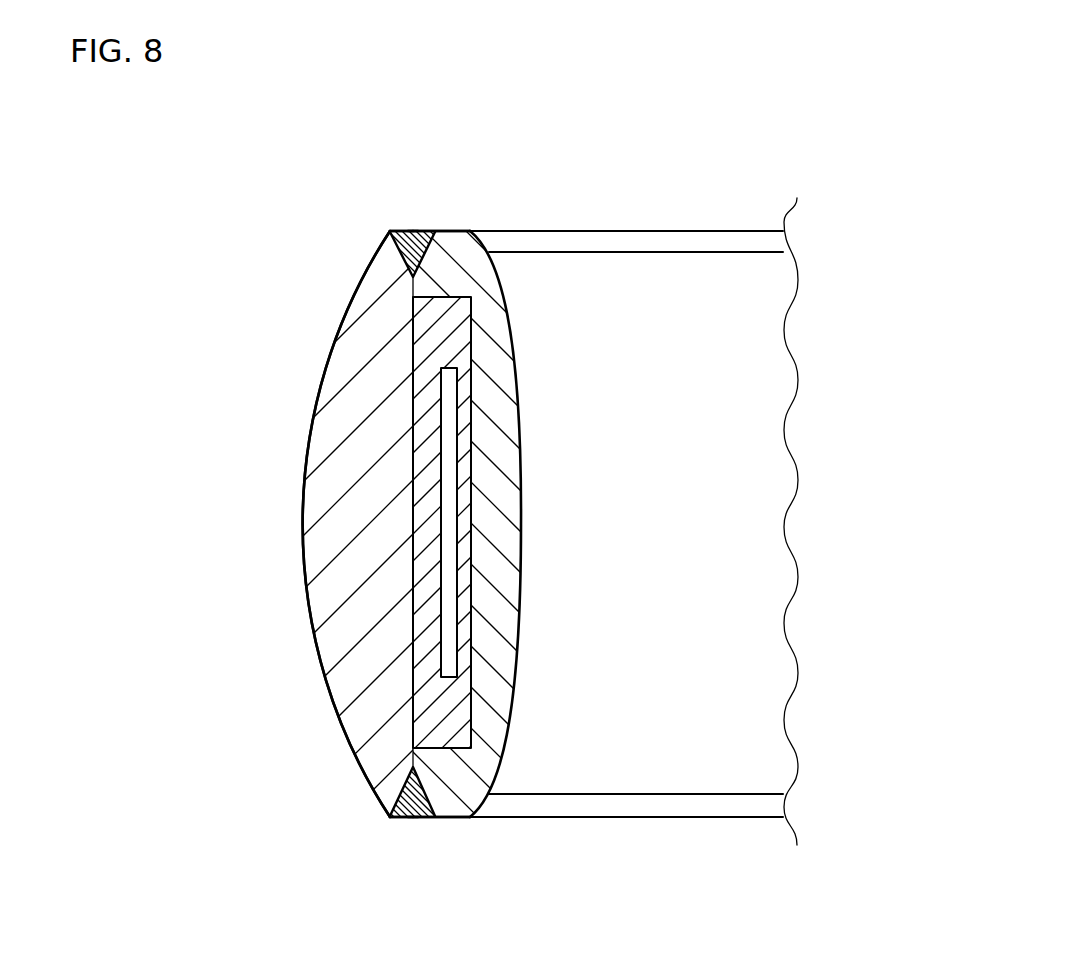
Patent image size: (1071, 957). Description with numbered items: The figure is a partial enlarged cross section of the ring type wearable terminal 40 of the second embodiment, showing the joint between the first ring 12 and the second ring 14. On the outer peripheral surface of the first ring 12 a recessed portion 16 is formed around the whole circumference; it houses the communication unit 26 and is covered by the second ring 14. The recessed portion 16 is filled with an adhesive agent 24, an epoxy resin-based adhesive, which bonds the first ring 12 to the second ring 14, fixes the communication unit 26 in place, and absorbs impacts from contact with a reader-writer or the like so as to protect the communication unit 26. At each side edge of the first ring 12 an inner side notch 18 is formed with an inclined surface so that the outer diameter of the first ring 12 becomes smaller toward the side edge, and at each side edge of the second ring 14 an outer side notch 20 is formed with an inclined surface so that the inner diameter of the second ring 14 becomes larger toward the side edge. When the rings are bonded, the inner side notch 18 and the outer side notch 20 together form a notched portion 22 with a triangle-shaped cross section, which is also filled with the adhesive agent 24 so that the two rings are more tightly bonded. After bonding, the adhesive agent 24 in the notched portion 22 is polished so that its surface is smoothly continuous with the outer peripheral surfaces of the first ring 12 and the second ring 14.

The ring type wearable terminal 40 is at (286, 118).
The first ring 12 is at (520, 462).
The second ring 14 is at (308, 453).
The recessed portion 16 is at (458, 328).
The inner side notch 18 is at (424, 231).
The outer side notch 20 is at (392, 231).
The notched portion 22 is at (413, 228).
The adhesive agent 24 is at (398, 259).
The communication unit 26 is at (458, 592).